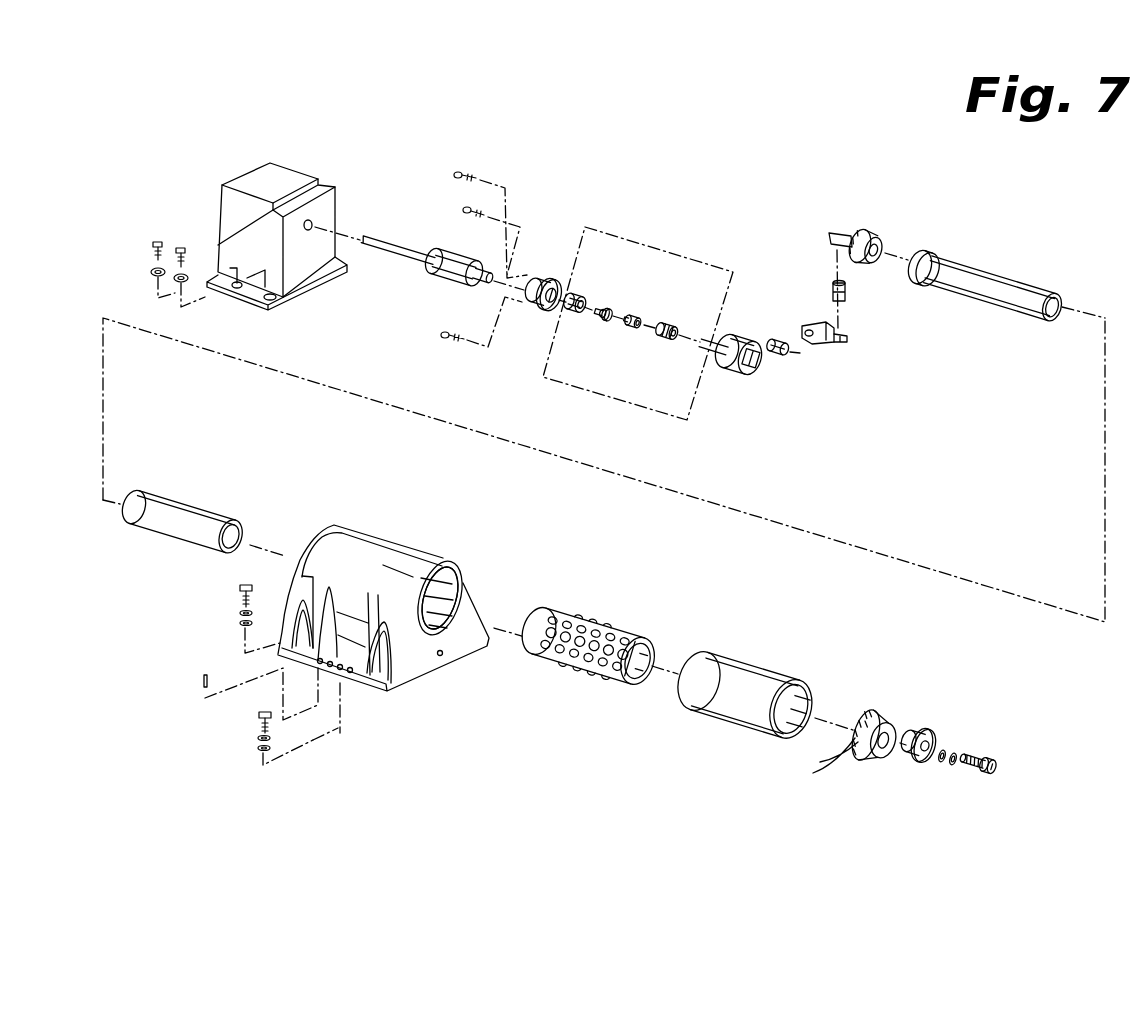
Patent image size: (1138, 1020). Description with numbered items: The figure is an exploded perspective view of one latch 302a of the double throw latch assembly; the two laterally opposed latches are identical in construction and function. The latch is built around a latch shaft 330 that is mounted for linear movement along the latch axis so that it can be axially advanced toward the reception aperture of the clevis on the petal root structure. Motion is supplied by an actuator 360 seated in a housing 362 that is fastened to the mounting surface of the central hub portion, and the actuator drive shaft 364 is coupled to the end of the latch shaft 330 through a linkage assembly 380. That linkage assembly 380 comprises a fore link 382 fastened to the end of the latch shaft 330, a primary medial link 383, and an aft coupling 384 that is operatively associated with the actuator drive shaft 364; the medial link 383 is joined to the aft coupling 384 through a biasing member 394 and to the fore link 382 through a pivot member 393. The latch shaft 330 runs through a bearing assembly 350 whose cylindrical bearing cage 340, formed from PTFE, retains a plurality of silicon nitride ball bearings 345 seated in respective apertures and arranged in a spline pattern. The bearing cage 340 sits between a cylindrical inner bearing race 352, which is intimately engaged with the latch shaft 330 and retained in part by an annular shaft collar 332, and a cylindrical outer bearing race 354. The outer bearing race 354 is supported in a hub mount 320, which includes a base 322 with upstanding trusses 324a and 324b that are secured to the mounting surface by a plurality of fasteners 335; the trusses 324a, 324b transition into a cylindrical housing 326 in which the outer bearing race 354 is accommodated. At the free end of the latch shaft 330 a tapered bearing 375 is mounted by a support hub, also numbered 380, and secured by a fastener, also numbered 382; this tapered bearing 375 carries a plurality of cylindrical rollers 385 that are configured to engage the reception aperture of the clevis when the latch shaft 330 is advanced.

The latch 302a is at (768, 606).
The hub mount 320 is at (417, 530).
The base 322 is at (430, 660).
The upstanding truss 324a is at (343, 498).
The upstanding truss 324b is at (393, 673).
The cylindrical housing 326 is at (453, 583).
The latch shaft 330 is at (1002, 283).
The annular shaft collar 332 is at (933, 250).
The fasteners 335 is at (247, 590).
The cylindrical bearing cage 340 is at (643, 633).
The ball bearings 345 is at (588, 617).
The bearing assembly 350 is at (622, 738).
The cylindrical inner bearing race 352 is at (158, 512).
The cylindrical outer bearing race 354 is at (717, 710).
The actuator 360 is at (252, 180).
The housing 362 is at (253, 302).
The actuator drive shaft 364 is at (428, 267).
The tapered bearing 375 is at (897, 707).
The linkage assembly 380 is at (627, 295).
The fore link 382 is at (870, 228).
The primary medial link 383 is at (732, 370).
The aft coupling 384 is at (552, 278).
The cylindrical rollers 385 is at (813, 771).
The pivot member 393 is at (810, 323).
The biasing member 394 is at (662, 337).